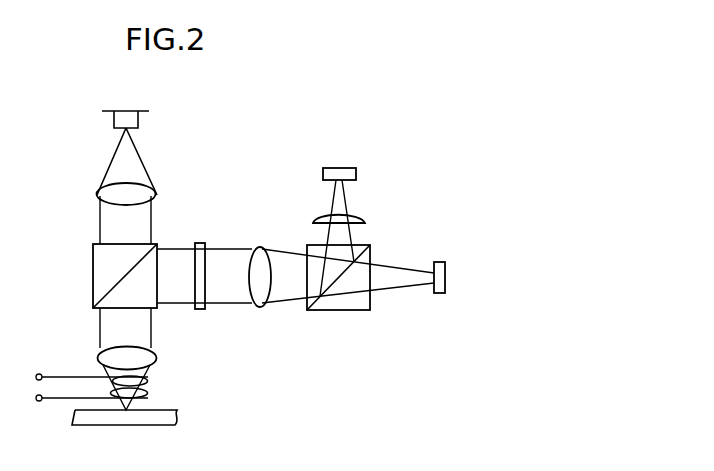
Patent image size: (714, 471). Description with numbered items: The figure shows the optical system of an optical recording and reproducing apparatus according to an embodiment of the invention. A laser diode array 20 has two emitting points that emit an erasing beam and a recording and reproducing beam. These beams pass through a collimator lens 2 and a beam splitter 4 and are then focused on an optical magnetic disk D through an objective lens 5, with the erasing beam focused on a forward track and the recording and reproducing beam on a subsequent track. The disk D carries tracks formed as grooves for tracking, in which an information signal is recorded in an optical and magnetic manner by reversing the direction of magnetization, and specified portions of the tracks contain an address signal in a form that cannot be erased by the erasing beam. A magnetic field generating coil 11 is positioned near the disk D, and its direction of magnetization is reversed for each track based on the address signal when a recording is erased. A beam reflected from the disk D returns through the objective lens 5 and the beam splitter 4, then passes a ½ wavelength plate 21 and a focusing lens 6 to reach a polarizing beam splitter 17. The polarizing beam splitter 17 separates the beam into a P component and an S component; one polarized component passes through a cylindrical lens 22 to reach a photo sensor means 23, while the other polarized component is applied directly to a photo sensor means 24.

The laser diode array 20 is at (122, 112).
The collimator lens 2 is at (155, 192).
The beam splitter 4 is at (93, 258).
The objective lens 5 is at (98, 362).
The magnetic field generating coil 11 is at (152, 380).
The ½ wavelength plate 21 is at (200, 310).
The focusing lens 6 is at (262, 307).
The polarizing beam splitter 17 is at (352, 310).
The photo sensor means 23 is at (348, 168).
The cylindrical lens 22 is at (363, 220).
The photo sensor means 24 is at (445, 267).
The optical magnetic disk D is at (124, 433).